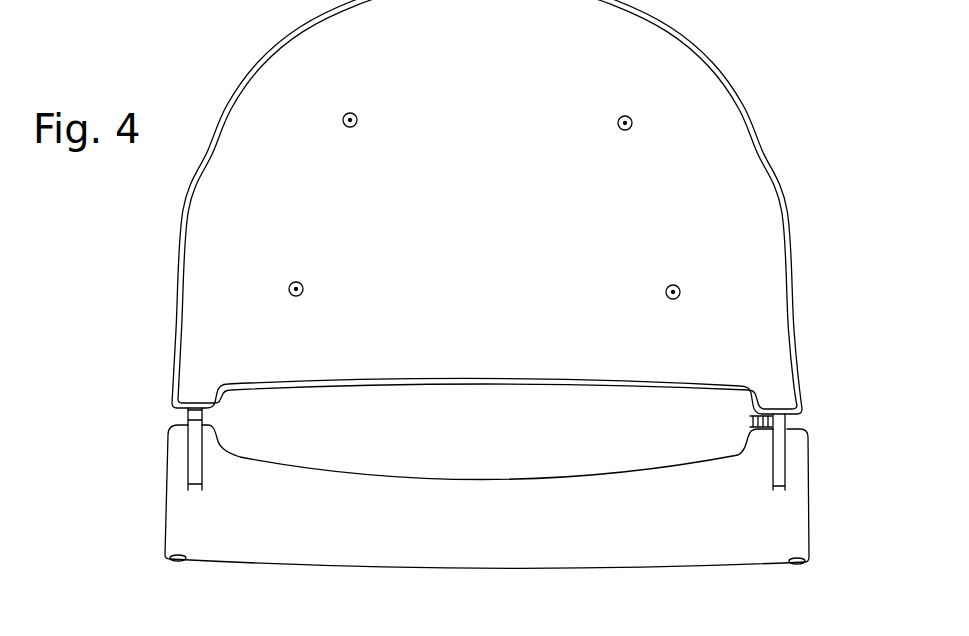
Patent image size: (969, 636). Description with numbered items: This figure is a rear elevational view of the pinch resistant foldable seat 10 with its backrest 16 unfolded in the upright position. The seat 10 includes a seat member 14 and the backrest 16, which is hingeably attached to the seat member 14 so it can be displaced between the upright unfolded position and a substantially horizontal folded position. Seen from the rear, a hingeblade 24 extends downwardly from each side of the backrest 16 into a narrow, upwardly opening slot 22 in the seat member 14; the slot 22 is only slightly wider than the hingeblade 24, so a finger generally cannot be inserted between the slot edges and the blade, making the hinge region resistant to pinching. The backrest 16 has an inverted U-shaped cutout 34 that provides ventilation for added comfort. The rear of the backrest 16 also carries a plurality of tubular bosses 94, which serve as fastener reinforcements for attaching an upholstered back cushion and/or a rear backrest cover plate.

The foldable seat 10 is at (150, 238).
The seat member 14 is at (620, 553).
The backrest 16 is at (731, 106).
The slot 22 is at (192, 456).
The hingeblade 24 is at (190, 418).
The inverted U-shaped cutout 34 is at (413, 386).
The tubular bosses 94 is at (357, 112).